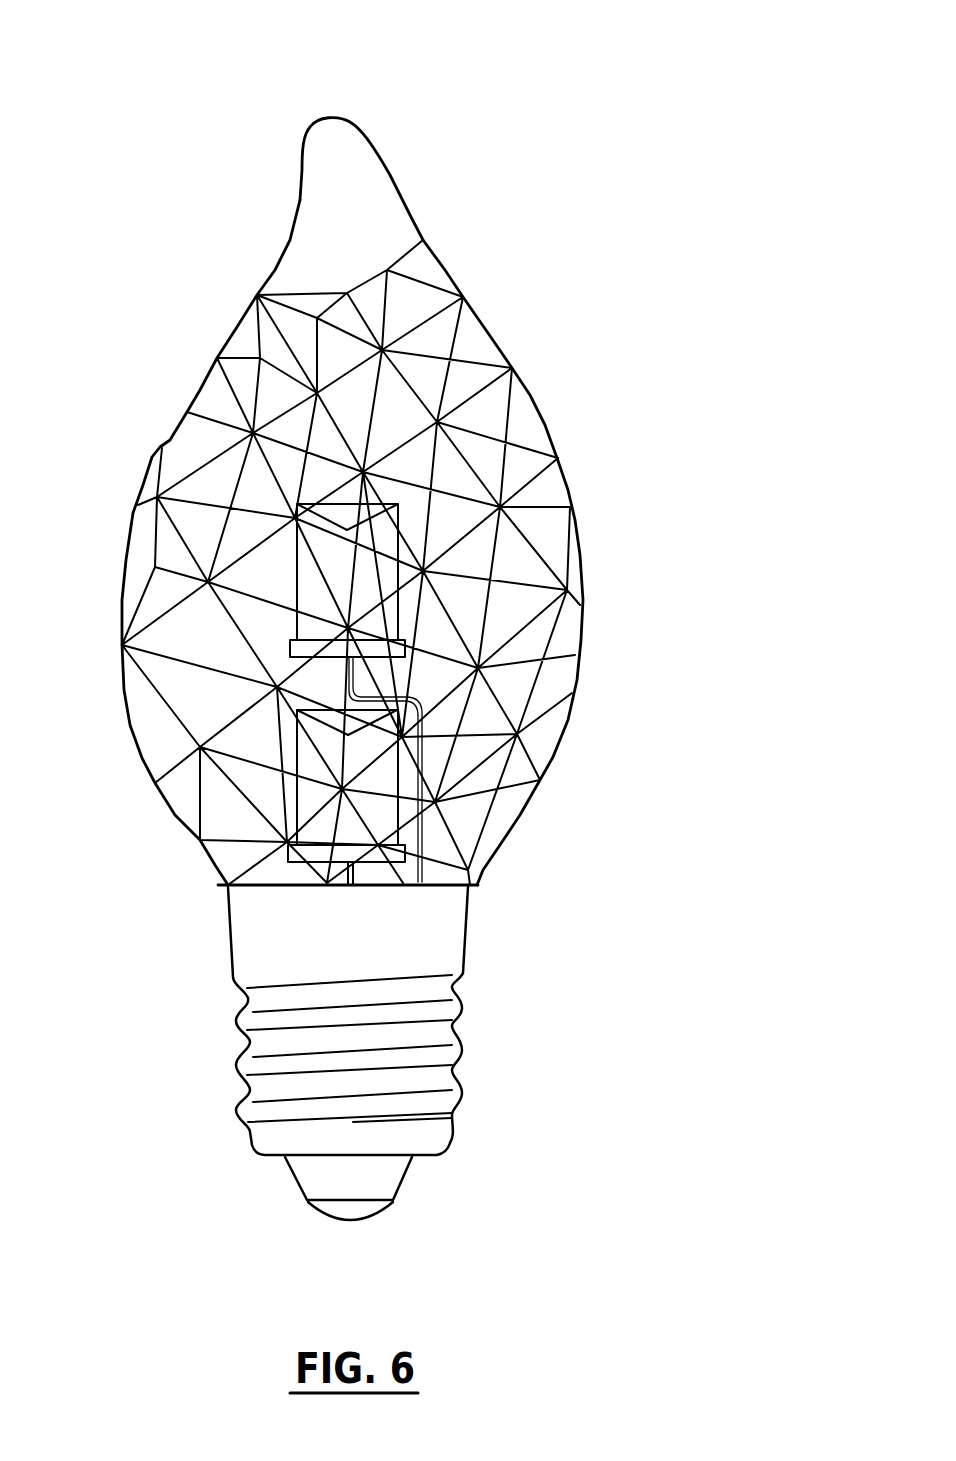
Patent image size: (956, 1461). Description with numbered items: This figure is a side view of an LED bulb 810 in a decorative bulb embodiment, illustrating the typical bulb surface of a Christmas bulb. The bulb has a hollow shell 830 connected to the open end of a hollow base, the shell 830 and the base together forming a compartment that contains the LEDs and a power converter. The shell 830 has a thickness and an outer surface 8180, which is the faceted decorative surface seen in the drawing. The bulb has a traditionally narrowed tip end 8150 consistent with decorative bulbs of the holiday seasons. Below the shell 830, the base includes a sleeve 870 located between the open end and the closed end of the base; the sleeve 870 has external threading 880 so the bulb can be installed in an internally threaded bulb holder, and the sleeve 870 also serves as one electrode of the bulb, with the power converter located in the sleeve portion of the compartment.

The LED bulb 810 is at (556, 182).
The narrowed tip end 8150 is at (358, 124).
The hollow shell 830 is at (567, 485).
The outer surface 8180 is at (478, 397).
The sleeve 870 is at (205, 885).
The external threading 880 is at (462, 1008).